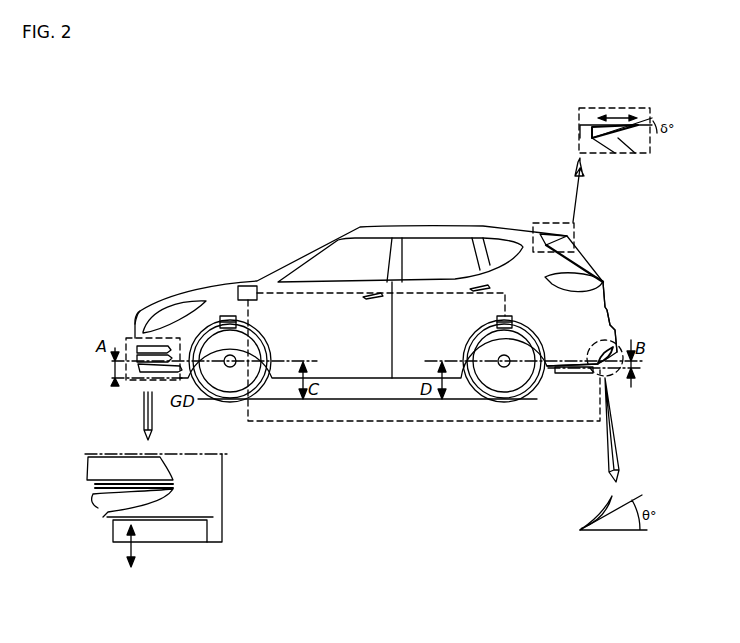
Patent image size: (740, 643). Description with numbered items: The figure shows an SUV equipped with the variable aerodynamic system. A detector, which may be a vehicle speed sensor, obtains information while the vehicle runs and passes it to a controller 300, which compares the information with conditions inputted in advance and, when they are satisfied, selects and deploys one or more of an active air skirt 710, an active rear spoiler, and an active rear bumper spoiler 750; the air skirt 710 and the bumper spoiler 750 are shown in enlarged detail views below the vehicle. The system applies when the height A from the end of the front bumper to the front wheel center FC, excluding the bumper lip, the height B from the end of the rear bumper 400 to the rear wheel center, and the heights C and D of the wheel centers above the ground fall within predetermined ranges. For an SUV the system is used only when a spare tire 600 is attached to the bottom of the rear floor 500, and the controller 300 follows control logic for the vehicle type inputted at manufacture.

The controller 300 is at (247, 286).
The rear bumper 400 is at (607, 300).
The rear floor 500 is at (553, 373).
The spare tire 600 is at (568, 374).
The active air skirt 710 is at (158, 543).
The active rear bumper spoiler 750 is at (610, 372).
The front wheel center FC is at (229, 368).